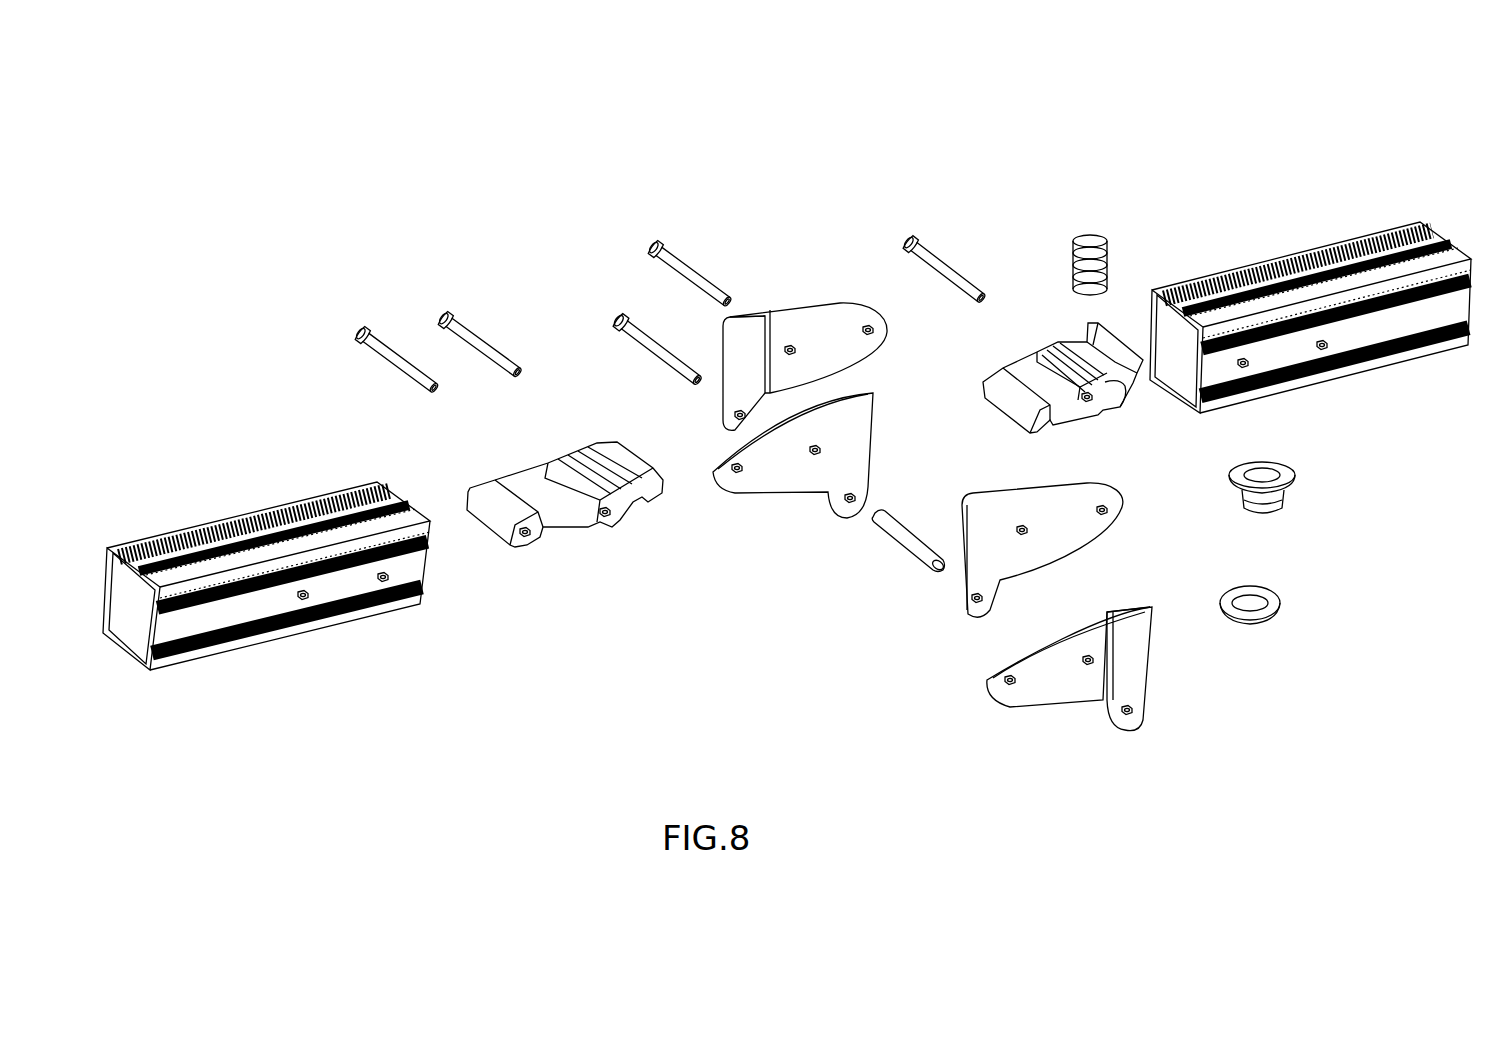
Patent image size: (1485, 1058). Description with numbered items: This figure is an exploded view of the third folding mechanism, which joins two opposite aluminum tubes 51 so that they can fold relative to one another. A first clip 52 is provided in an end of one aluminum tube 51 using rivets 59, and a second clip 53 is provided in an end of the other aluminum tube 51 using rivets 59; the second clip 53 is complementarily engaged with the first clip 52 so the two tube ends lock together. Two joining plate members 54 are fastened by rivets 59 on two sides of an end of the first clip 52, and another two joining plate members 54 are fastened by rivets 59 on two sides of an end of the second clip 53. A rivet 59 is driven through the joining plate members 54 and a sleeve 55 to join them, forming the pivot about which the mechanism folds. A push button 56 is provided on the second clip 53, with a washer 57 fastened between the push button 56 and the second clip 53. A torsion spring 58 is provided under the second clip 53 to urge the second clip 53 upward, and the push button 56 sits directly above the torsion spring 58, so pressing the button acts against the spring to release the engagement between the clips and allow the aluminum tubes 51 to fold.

The aluminum tube 51 is at (222, 540).
The first clip 52 is at (605, 452).
The second clip 53 is at (1058, 345).
The joining plate member 54 is at (808, 323).
The sleeve 55 is at (893, 550).
The push button 56 is at (1268, 505).
The washer 57 is at (1268, 612).
The torsion spring 58 is at (1082, 237).
The rivet 59 is at (912, 243).